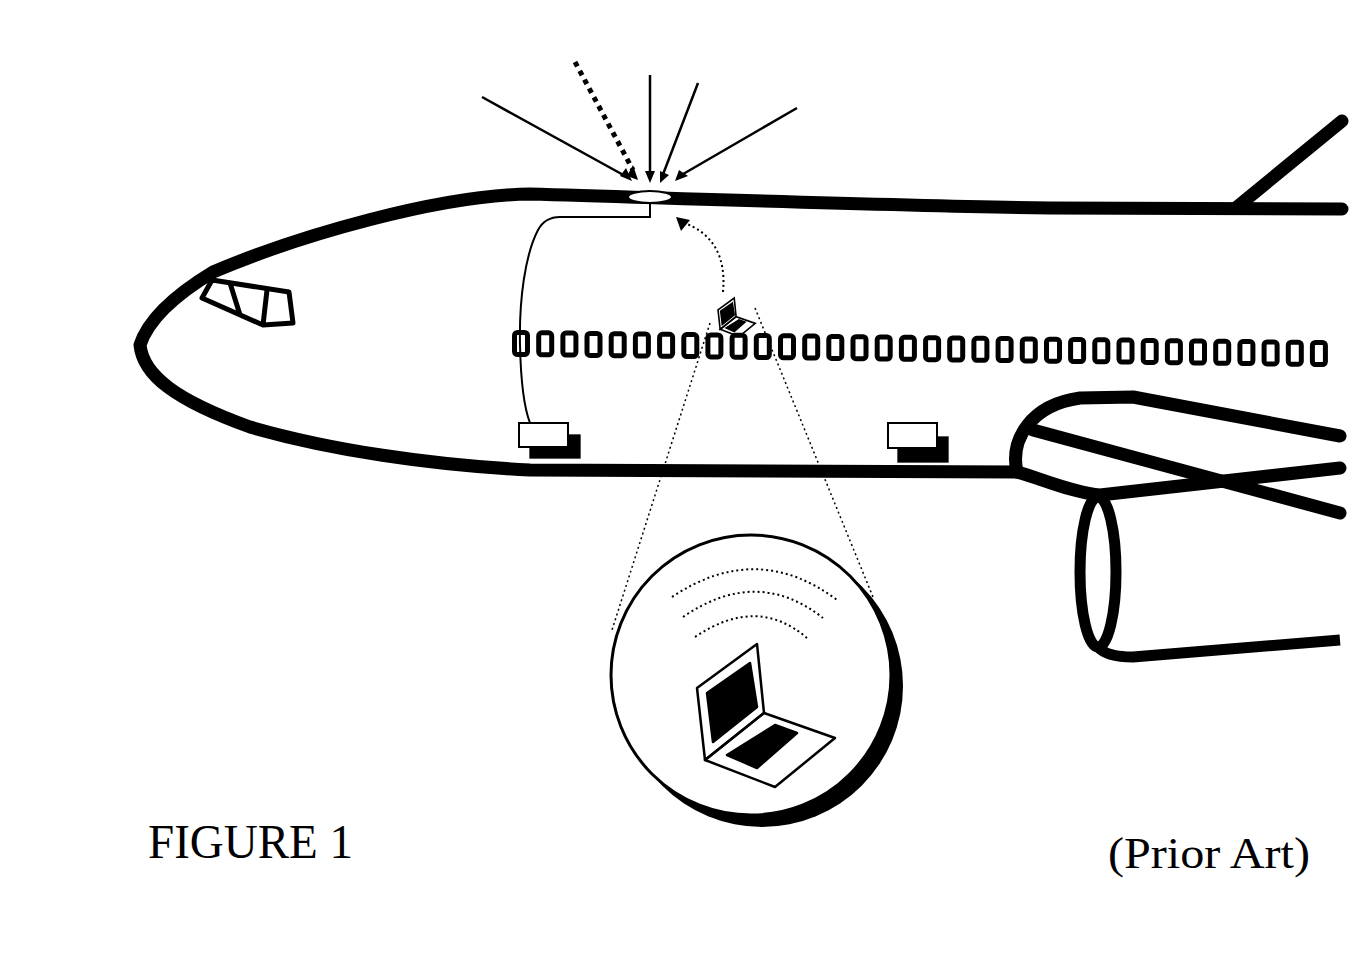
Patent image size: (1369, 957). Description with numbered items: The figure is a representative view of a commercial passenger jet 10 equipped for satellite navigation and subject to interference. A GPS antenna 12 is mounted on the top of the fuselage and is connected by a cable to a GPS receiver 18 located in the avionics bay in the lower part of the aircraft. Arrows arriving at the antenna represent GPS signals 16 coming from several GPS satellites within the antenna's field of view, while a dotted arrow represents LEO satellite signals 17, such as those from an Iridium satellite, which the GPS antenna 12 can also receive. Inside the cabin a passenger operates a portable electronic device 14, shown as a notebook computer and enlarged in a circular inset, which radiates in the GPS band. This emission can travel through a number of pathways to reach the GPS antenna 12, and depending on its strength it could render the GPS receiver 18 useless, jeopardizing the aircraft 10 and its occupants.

The commercial passenger jet 10 is at (1130, 150).
The GPS antenna 12 is at (630, 203).
The portable electronic device 14 is at (715, 312).
The GPS signals 16 is at (538, 135).
The LEO satellite signals 17 is at (597, 105).
The GPS receiver 18 is at (518, 443).